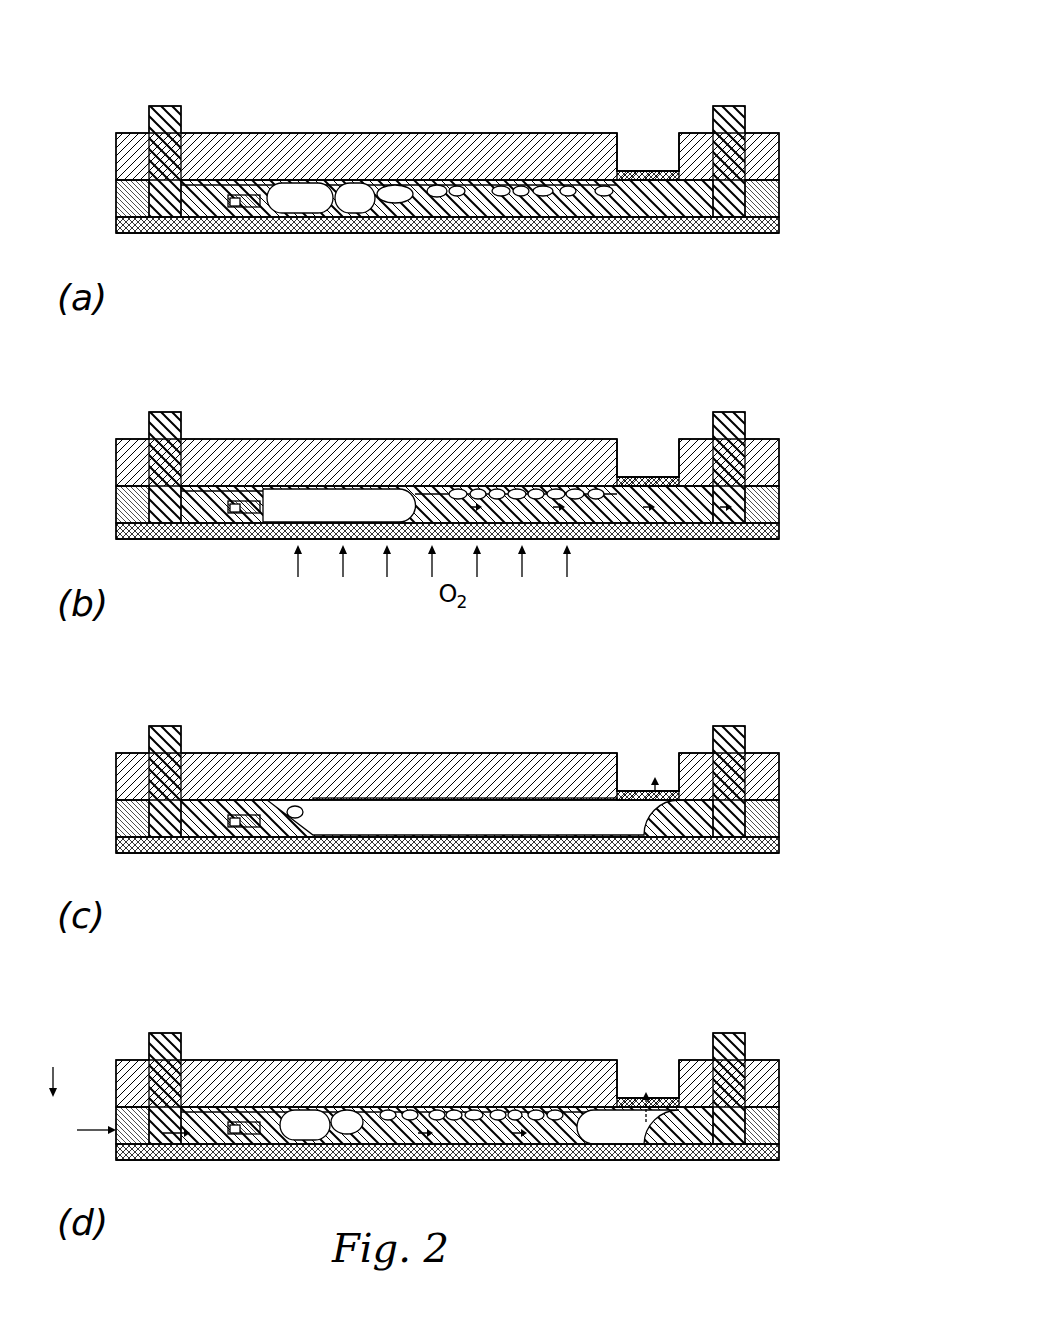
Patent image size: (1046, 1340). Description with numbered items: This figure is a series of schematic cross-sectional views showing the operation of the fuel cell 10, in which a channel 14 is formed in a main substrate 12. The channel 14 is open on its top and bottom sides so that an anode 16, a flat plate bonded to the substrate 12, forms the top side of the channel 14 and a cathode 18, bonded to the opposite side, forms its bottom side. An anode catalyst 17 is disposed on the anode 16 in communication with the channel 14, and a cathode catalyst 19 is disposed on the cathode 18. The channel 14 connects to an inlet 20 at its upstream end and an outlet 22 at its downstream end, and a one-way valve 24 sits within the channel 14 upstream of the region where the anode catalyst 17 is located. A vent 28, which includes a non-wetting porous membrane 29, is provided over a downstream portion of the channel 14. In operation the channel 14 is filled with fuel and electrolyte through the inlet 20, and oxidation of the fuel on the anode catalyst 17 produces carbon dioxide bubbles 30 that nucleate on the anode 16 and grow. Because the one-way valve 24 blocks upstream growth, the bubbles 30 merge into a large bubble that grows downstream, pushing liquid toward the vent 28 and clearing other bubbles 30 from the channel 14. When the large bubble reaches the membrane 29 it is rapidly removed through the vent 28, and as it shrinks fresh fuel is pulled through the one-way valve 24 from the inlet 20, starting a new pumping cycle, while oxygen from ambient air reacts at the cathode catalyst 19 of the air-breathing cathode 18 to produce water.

The fuel cell 10 is at (414, 618).
The main substrate 12 is at (116, 210).
The channel 14 is at (187, 234).
The anode 16 is at (392, 159).
The anode catalyst 17 is at (301, 181).
The cathode 18 is at (528, 233).
The cathode catalyst 19 is at (583, 234).
The inlet 20 is at (175, 107).
The outlet 22 is at (735, 107).
The one-way valve 24 is at (247, 219).
The vent 28 is at (658, 155).
The porous membrane 29 is at (623, 170).
The bubbles 30 is at (340, 205).